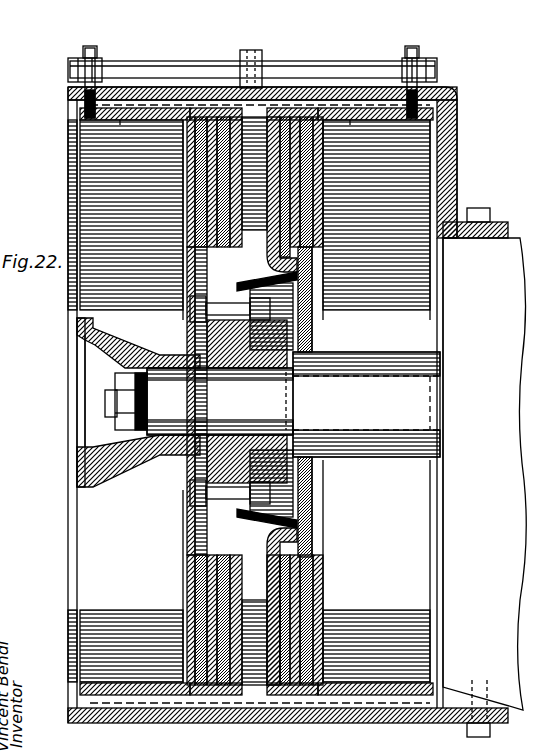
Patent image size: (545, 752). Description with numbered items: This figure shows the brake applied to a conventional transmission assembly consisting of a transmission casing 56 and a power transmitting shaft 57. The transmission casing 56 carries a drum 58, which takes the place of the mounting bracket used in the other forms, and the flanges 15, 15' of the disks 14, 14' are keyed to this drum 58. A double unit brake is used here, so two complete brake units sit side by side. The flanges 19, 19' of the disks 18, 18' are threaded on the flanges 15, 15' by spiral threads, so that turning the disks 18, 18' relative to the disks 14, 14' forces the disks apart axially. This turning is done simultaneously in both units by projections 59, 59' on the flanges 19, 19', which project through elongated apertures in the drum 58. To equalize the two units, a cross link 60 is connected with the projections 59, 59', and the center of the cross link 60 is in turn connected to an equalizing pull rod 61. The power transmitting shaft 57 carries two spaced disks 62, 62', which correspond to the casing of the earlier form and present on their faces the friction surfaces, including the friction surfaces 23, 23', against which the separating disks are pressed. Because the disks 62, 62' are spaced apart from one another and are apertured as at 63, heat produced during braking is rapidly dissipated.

The annular disk 14 is at (216, 80).
The annular disk 14' is at (292, 79).
The inner peripheral flange 15 is at (137, 80).
The inner peripheral flange 15' is at (375, 79).
The annular disk 18 is at (178, 182).
The annular disk 18' is at (332, 182).
The inner peripheral flange 19 is at (133, 83).
The inner peripheral flange 19' is at (357, 71).
The annular friction surface 23 is at (127, 220).
The annular friction surface 23' is at (376, 220).
The transmission casing 56 is at (484, 472).
The power transmitting shaft 57 is at (199, 401).
The drum 58 is at (365, 92).
The projection 59 is at (90, 68).
The projection 59' is at (423, 70).
The cross link 60 is at (273, 62).
The equalizing pull rod 61 is at (246, 50).
The disk 62 is at (190, 195).
The disk 62' is at (321, 195).
The apertures 63 is at (205, 292).